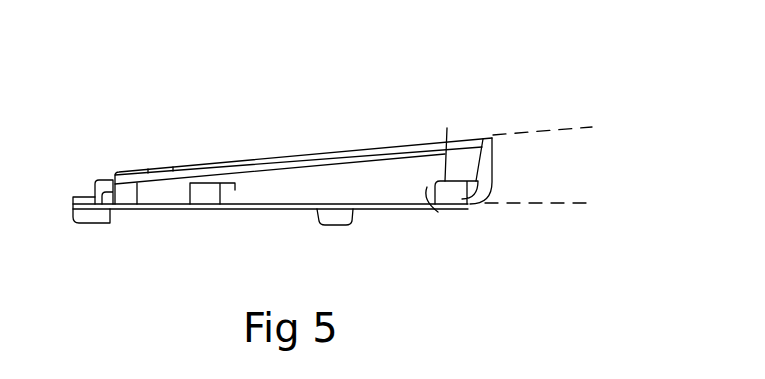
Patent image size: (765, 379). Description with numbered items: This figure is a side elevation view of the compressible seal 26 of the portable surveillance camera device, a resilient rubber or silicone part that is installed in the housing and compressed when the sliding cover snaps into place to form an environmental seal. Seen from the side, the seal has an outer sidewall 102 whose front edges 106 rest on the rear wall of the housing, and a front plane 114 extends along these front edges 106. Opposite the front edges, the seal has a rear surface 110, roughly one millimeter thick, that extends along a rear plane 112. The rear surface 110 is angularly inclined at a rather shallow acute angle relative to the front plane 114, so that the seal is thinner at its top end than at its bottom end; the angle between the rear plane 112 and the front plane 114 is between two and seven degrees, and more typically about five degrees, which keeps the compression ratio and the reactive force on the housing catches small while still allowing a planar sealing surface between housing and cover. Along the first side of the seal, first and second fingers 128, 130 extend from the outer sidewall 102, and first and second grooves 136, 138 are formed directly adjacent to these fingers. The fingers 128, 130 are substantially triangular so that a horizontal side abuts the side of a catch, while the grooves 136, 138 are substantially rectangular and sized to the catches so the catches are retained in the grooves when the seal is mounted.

The compressible seal 26 is at (377, 131).
The outer sidewall 102 is at (434, 208).
The front edges 106 is at (426, 212).
The rear surface 110 is at (284, 155).
The rear plane 112 is at (527, 133).
The front plane 114 is at (530, 201).
The first finger 128 is at (248, 204).
The second finger 130 is at (484, 137).
The first groove 136 is at (205, 192).
The second groove 138 is at (447, 128).